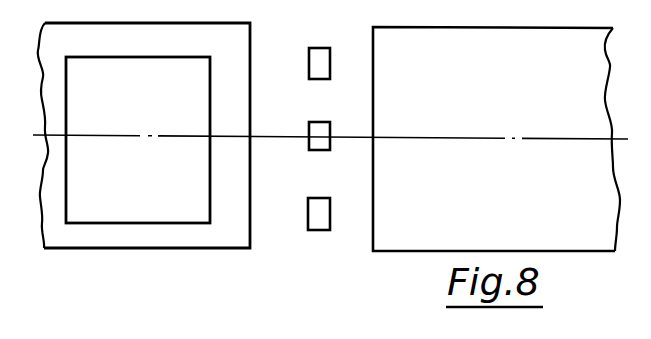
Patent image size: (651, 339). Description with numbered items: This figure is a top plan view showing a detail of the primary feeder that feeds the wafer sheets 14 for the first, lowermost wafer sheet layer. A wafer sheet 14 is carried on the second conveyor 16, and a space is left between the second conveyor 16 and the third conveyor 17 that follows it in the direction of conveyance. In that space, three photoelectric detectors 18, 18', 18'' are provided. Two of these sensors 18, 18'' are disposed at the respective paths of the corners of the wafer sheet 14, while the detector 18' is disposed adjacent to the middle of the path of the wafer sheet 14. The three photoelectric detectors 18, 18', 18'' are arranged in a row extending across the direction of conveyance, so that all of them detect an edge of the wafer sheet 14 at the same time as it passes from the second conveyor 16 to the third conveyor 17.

The wafer sheet 14 is at (167, 212).
The second conveyor 16 is at (229, 240).
The third conveyor 17 is at (392, 243).
The photoelectric detector 18 is at (333, 47).
The photoelectric detector 18' is at (336, 121).
The photoelectric detector 18'' is at (337, 200).